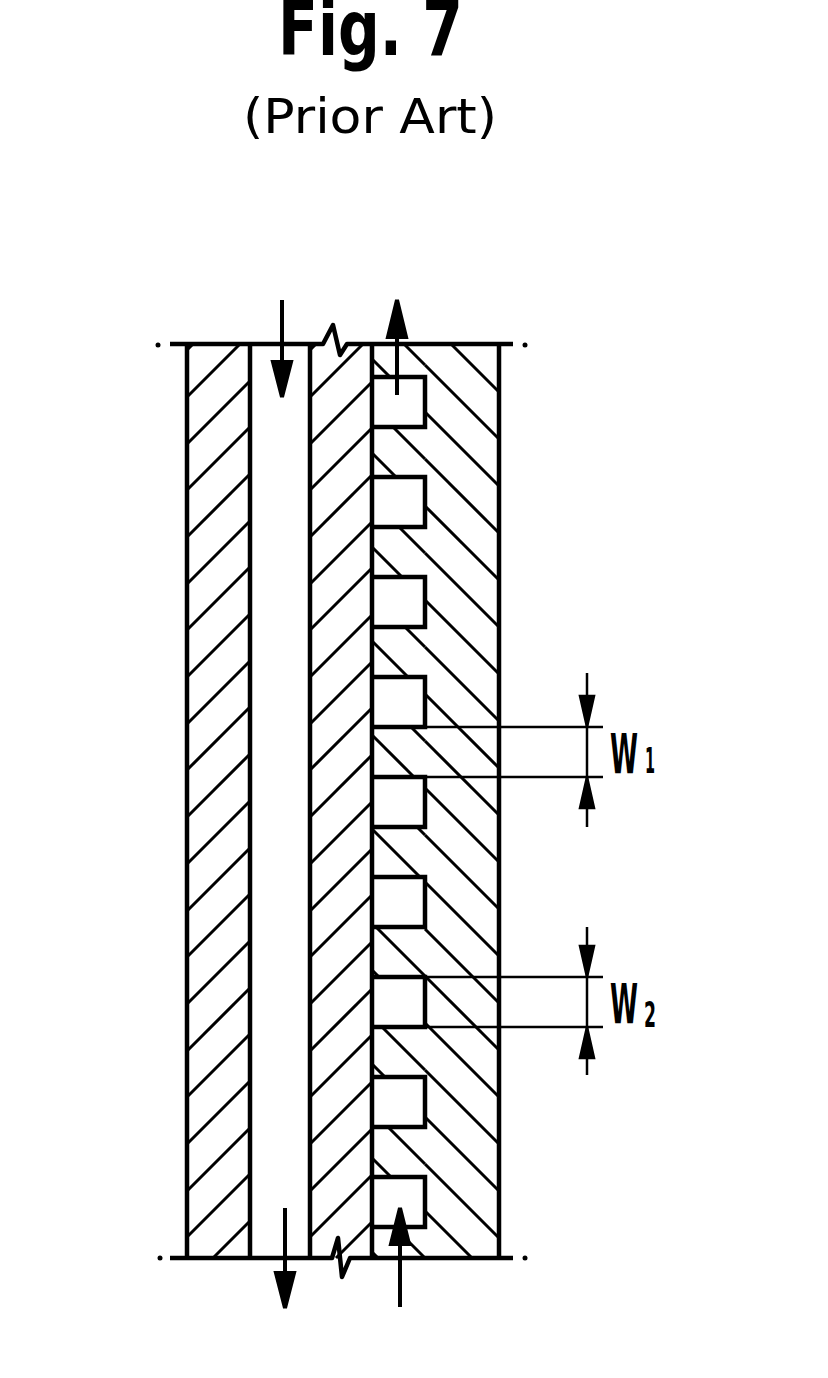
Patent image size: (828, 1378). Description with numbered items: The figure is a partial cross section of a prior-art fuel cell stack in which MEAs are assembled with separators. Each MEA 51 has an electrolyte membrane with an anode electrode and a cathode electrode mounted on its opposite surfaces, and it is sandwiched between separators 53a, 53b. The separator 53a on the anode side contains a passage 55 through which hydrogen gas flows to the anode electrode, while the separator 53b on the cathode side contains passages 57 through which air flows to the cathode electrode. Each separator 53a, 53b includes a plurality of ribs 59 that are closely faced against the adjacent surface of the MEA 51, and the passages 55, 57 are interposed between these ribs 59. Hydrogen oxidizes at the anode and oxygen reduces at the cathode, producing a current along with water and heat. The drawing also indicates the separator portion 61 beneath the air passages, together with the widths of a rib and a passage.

The MEA 51 is at (327, 582).
The separator 53a is at (187, 692).
The separator 53b is at (499, 552).
The passage 55 is at (277, 510).
The passage 57 is at (403, 487).
The rib 59 is at (394, 742).
The channel bottom wall of cathode separator 61 is at (460, 1005).